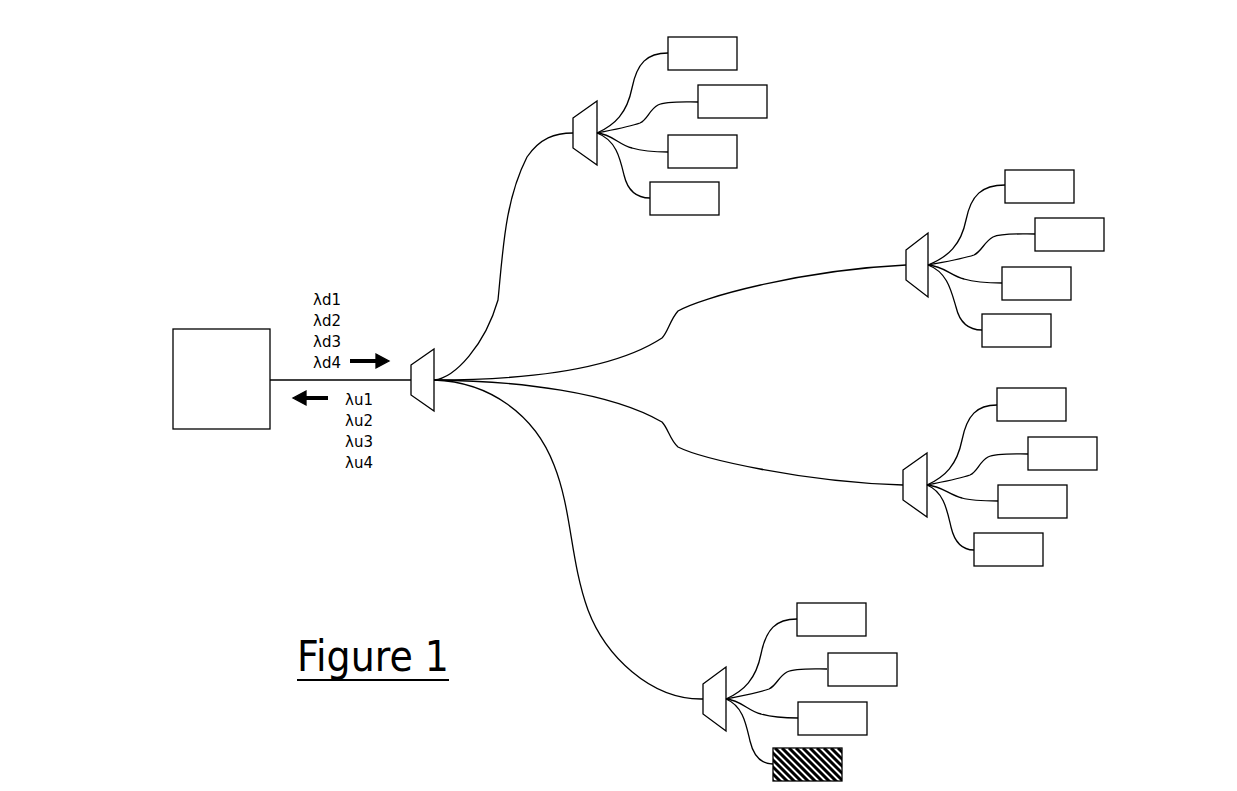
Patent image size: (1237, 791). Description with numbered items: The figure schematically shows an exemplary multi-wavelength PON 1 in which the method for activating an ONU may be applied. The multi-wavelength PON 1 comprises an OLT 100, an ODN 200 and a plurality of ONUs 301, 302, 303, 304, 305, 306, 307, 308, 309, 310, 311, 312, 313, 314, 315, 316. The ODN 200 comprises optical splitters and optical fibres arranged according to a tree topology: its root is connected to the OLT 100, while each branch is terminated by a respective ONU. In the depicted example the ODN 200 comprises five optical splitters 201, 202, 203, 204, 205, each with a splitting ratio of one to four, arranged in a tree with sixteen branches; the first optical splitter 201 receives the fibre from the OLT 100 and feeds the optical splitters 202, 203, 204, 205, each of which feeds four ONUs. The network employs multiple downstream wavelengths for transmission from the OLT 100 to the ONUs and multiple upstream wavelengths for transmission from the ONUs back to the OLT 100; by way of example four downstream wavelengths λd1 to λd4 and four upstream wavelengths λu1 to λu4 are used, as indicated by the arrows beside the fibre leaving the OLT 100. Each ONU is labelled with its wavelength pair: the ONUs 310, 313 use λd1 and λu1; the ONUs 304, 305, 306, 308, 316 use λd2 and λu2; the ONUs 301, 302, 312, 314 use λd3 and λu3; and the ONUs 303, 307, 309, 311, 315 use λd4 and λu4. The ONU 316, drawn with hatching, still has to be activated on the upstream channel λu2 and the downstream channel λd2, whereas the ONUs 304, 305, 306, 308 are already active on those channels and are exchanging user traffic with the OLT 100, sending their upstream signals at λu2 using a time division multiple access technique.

The multi-wavelength PON 1 is at (426, 134).
The OLT 100 is at (222, 328).
The ODN 200 is at (519, 499).
The optical splitter 201 is at (422, 352).
The optical splitter 202 is at (585, 105).
The optical splitter 203 is at (916, 238).
The optical splitter 204 is at (916, 458).
The optical splitter 205 is at (712, 671).
The ONU 301 is at (737, 54).
The ONU 302 is at (767, 102).
The ONU 303 is at (737, 152).
The ONU 304 is at (719, 199).
The ONU 305 is at (1074, 187).
The ONU 306 is at (1104, 235).
The ONU 307 is at (1071, 284).
The ONU 308 is at (1051, 331).
The ONU 309 is at (1066, 405).
The ONU 310 is at (1097, 454).
The ONU 311 is at (1067, 502).
The ONU 312 is at (1043, 550).
The ONU 313 is at (866, 620).
The ONU 314 is at (897, 670).
The ONU 315 is at (867, 719).
The ONU 316 is at (842, 765).